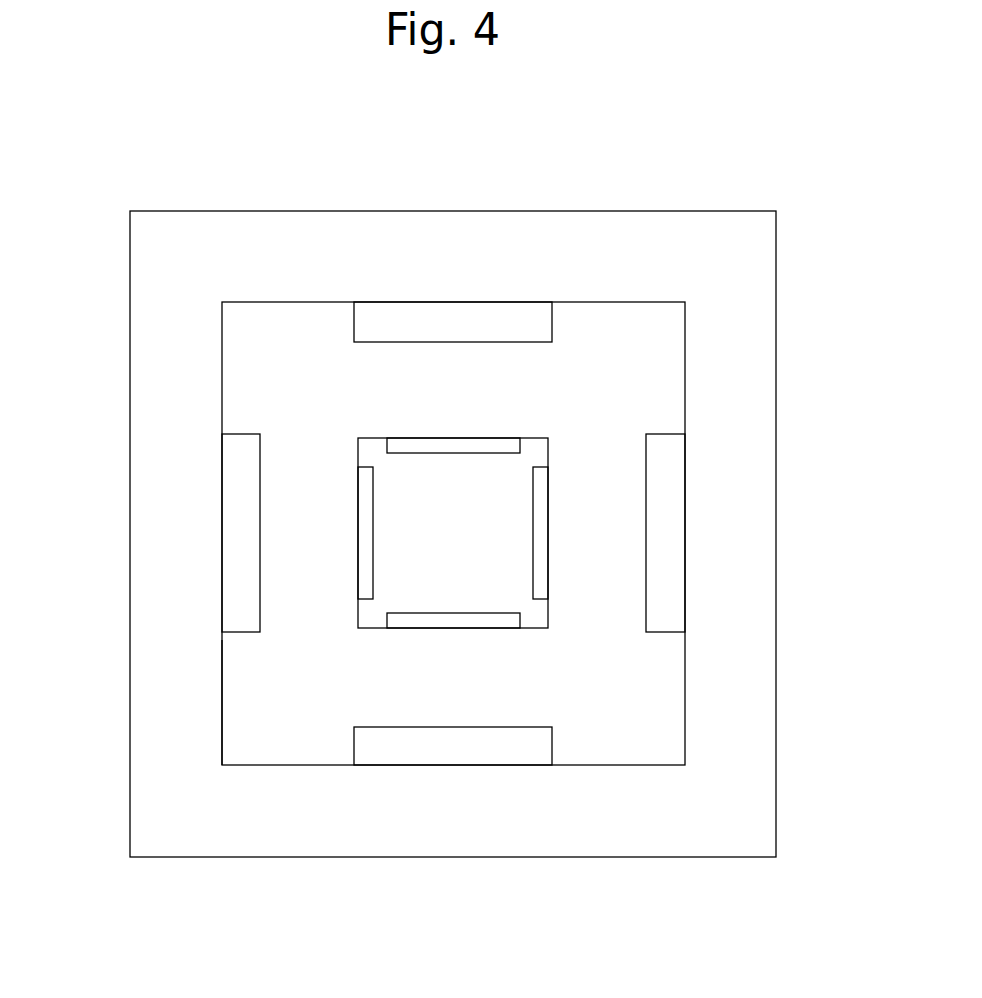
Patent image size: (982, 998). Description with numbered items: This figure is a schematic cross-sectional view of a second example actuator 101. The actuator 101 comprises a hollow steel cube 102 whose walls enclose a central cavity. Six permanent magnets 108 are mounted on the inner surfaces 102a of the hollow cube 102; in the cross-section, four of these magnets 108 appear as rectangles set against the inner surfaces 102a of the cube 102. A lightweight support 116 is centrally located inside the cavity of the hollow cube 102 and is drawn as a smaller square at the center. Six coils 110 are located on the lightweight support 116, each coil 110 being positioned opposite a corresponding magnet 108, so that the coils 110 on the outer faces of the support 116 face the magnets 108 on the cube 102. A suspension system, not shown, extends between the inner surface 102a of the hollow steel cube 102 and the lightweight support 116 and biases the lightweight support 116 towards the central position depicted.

The actuator 101 is at (172, 150).
The hollow steel cube 102 is at (753, 727).
The inner surfaces of the hollow cube 102a is at (234, 709).
The permanent magnets 108 is at (426, 319).
The coils 110 is at (483, 445).
The lightweight support 116 is at (492, 583).